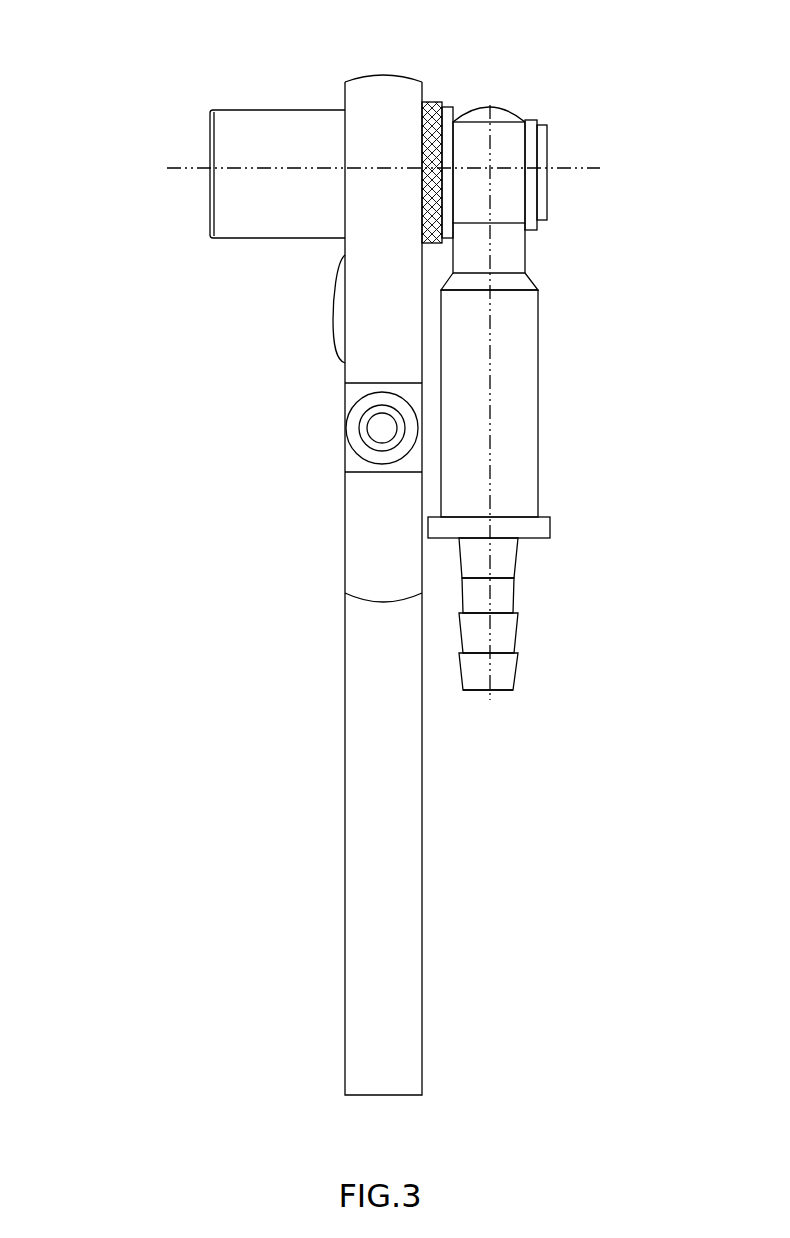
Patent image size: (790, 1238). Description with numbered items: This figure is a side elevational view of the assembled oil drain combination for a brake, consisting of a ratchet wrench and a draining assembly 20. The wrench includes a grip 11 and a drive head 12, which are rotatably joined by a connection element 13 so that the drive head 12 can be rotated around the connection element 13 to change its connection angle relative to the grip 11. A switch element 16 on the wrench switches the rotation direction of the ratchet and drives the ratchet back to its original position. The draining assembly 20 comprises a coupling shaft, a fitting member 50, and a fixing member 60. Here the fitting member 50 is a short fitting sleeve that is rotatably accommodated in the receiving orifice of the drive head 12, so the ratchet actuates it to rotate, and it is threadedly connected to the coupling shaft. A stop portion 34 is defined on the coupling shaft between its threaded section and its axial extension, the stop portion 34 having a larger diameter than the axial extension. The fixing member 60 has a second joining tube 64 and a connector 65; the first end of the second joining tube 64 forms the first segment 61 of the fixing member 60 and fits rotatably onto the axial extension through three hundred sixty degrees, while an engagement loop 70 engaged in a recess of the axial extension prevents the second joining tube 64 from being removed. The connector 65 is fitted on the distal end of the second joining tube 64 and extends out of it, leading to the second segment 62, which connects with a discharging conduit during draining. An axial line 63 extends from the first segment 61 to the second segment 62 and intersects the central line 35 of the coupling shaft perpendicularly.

The grip 11 is at (368, 787).
The drive head 12 is at (373, 302).
The connection element 13 is at (344, 428).
The switch element 16 is at (326, 348).
The draining assembly 20 is at (199, 197).
The stop portion 34 is at (433, 100).
The central line 35 is at (184, 168).
The fitting member 50 is at (260, 110).
The fixing member 60 is at (545, 381).
The first segment 61 is at (490, 107).
The second segment 62 is at (500, 693).
The axial line 63 is at (490, 480).
The second joining tube 64 is at (538, 312).
The connector 65 is at (516, 575).
The engagement loop 70 is at (538, 121).